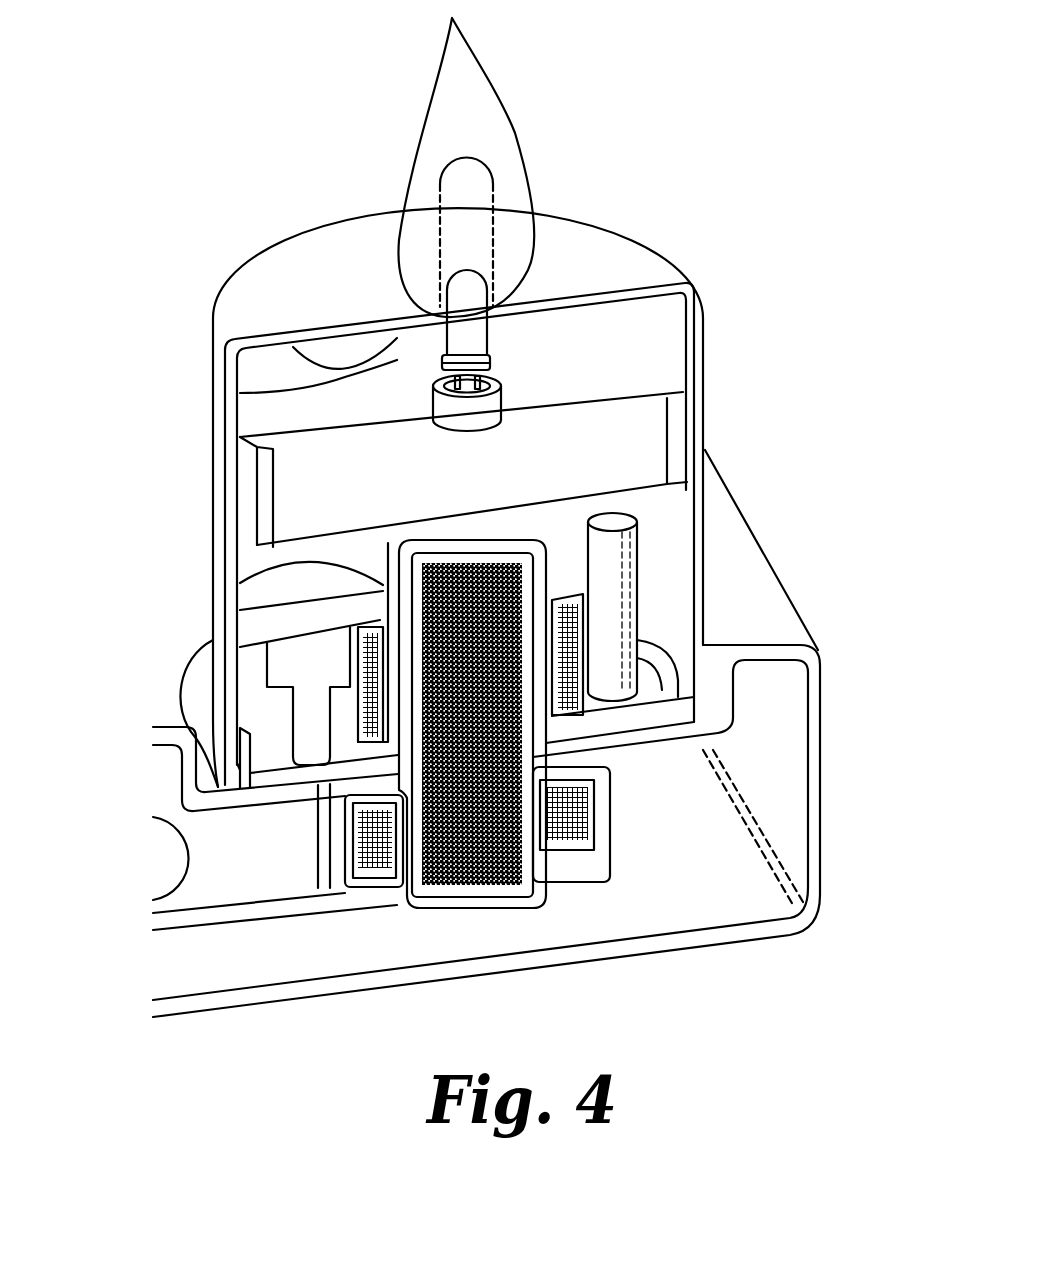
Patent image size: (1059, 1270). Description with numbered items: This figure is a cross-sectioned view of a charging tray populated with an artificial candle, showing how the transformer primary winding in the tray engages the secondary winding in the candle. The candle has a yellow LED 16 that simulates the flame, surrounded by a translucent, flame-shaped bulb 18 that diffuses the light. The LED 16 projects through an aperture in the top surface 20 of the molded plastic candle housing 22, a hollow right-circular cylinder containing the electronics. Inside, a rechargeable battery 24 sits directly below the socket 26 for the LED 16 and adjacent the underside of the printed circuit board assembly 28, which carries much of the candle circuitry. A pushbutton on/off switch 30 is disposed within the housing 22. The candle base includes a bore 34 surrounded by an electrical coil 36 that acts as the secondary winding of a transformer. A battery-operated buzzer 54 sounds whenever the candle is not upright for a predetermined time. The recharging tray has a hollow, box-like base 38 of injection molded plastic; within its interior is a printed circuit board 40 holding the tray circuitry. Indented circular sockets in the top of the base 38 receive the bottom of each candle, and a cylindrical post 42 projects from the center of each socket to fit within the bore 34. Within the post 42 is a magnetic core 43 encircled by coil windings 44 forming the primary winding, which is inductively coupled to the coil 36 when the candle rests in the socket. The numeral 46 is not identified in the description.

The yellow LED 16 is at (466, 266).
The translucent bulb 18 is at (533, 182).
The top surface 20 is at (622, 248).
The candle housing 22 is at (710, 302).
The rechargeable battery 24 is at (458, 490).
The socket 26 is at (437, 405).
The printed circuit board assembly 28 is at (577, 381).
The pushbutton on/off switch 30 is at (333, 671).
The bore 34 is at (462, 556).
The electrical coil 36 is at (568, 585).
The base 38 is at (822, 785).
The printed circuit board 40 is at (287, 868).
The cylindrical post 42 is at (478, 530).
The magnetic core 43 is at (477, 885).
The coil windings 44 is at (593, 815).
The coil 46 is at (560, 596).
The buzzer 54 is at (240, 392).